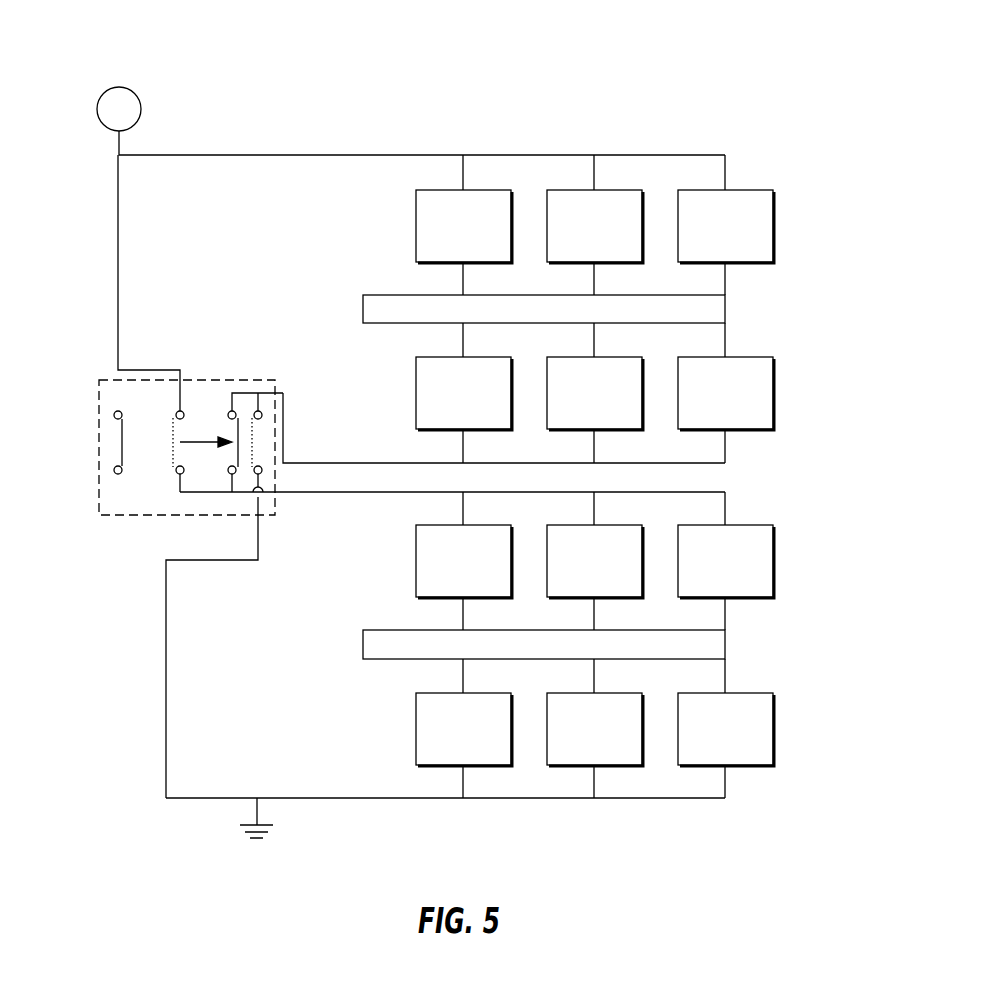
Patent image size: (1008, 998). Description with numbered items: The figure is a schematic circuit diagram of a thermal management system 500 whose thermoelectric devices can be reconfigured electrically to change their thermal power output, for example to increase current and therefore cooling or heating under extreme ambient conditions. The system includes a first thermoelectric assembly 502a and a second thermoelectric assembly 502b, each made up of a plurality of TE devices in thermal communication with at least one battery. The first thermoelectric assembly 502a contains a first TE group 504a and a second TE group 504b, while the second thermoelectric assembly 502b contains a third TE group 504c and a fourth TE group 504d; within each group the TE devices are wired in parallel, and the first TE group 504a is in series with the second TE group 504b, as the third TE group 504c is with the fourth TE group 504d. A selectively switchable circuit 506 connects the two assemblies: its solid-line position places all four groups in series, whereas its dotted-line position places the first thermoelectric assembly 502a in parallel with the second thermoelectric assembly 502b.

The thermal management system 500 is at (606, 80).
The first thermoelectric assembly 502a is at (811, 190).
The second thermoelectric assembly 502b is at (812, 525).
The first TE group 504a is at (377, 190).
The second TE group 504b is at (377, 357).
The third TE group 504c is at (377, 525).
The fourth TE group 504d is at (377, 693).
The circuit 506 is at (99, 395).